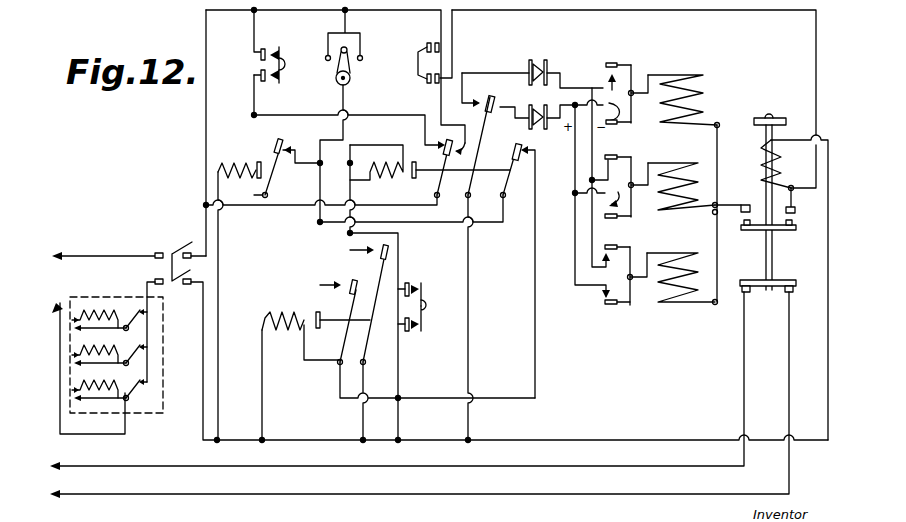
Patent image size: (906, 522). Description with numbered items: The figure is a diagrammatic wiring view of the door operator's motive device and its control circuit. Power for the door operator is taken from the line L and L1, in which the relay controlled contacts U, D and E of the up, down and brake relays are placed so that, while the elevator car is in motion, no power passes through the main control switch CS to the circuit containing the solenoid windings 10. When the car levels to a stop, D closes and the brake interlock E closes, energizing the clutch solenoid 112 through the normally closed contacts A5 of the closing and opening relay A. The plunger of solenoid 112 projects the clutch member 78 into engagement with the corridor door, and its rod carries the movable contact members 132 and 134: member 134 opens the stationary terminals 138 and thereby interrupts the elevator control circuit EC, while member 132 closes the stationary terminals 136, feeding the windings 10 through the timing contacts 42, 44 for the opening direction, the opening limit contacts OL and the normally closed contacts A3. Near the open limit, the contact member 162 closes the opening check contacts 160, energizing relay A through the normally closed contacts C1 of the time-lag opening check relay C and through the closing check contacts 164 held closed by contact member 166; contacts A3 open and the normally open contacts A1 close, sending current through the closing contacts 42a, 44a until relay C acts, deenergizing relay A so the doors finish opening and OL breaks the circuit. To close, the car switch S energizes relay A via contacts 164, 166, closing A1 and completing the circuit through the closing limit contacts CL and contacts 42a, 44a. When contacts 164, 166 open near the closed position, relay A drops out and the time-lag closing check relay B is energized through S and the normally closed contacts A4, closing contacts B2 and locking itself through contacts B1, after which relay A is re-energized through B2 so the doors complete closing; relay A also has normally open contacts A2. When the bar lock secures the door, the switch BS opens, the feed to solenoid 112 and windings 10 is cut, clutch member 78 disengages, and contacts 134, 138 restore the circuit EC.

The opening check contacts 160 is at (259, 60).
The contact member 162 is at (289, 50).
The closing check contacts 164 is at (424, 288).
The contact member 166 is at (424, 322).
The solenoid windings 10 is at (702, 100).
The timing contacts 42 is at (578, 300).
The closing contacts 42a is at (606, 76).
The timing contacts 44 is at (618, 123).
The closing contacts 44a is at (617, 63).
The clutch member 78 is at (786, 119).
The solenoid 112 is at (777, 169).
The movable contact member 132 is at (783, 231).
The movable contact member 134 is at (757, 296).
The stationary terminals 136 is at (748, 203).
The stationary terminals 138 is at (738, 298).
The car switch S is at (355, 70).
The opening check relay C is at (237, 162).
The contacts of relay C C1 is at (287, 168).
The closing and opening relay A is at (384, 176).
The contacts of relay A A1 is at (485, 100).
The contacts of relay A A2 is at (442, 145).
The contacts of relay A A3 is at (498, 108).
The contacts of relay A A4 is at (524, 160).
The contacts of relay A A5 is at (461, 156).
The bar lock switch BS is at (429, 63).
The closing limit contacts CL is at (539, 59).
The opening limit contacts OL is at (530, 127).
The closing check relay B is at (289, 335).
The contacts of relay B B1 is at (347, 281).
The contacts of relay B B2 is at (381, 242).
The line L is at (58, 245).
The line L1 is at (88, 356).
The main control switch CS is at (170, 251).
The elevator control circuit EC is at (193, 466).
The up relay contacts U is at (111, 320).
The down relay contacts D is at (110, 355).
The brake relay contacts E is at (109, 390).